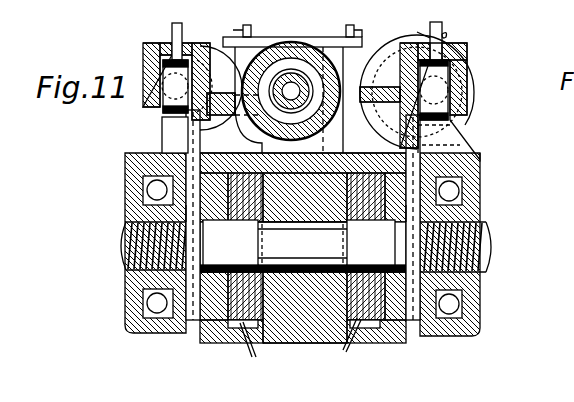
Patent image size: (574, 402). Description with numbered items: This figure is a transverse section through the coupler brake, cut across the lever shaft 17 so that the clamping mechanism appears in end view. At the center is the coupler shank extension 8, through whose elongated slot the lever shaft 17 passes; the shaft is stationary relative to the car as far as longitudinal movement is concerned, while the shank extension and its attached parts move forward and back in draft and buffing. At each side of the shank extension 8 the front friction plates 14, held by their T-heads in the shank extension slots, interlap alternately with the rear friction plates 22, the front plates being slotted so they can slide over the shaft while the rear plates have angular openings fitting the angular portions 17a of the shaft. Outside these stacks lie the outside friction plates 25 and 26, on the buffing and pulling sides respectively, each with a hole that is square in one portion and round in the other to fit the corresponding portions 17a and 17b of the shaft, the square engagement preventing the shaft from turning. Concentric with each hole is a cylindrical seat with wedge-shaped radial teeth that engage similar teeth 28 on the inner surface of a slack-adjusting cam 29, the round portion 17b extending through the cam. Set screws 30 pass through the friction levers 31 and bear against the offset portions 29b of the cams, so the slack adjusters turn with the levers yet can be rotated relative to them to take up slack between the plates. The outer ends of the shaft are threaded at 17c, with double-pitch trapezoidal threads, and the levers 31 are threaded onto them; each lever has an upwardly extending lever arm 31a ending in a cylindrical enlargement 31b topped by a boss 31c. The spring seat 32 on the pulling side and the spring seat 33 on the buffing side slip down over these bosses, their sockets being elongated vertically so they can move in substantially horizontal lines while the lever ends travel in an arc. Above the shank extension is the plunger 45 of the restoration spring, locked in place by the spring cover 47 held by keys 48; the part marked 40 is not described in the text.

The shank extension 8 is at (313, 330).
The front friction plates 14 is at (190, 325).
The lever shaft 17 is at (303, 247).
The angular portion of lever shaft 17a is at (299, 246).
The round portion of lever shaft 17b is at (180, 256).
The threaded ends of lever shaft 17c is at (493, 247).
The rear friction plates 22 is at (300, 348).
The outside friction plate 25 is at (393, 335).
The outside friction plate 26 is at (212, 335).
The wedge-shaped teeth 28 is at (186, 208).
The slack-adjusting cam 29 is at (183, 222).
The offset portion of slack-adjuster 29b is at (462, 190).
The set screws 30 is at (146, 188).
The friction levers 31 is at (480, 175).
The lever arm 31a is at (478, 133).
The cylindrical enlargement 31b is at (444, 88).
The boss 31c is at (444, 16).
The spring seat 32 is at (152, 43).
The spring seat 33 is at (468, 50).
The bracket 40 is at (255, 62).
The plunger 45 is at (300, 76).
The spring cover 47 is at (292, 58).
The keys 48 is at (250, 37).